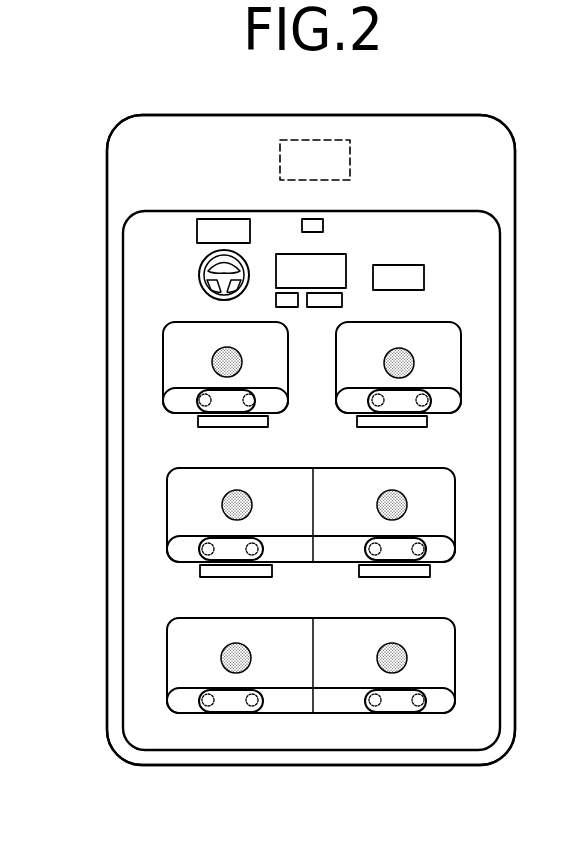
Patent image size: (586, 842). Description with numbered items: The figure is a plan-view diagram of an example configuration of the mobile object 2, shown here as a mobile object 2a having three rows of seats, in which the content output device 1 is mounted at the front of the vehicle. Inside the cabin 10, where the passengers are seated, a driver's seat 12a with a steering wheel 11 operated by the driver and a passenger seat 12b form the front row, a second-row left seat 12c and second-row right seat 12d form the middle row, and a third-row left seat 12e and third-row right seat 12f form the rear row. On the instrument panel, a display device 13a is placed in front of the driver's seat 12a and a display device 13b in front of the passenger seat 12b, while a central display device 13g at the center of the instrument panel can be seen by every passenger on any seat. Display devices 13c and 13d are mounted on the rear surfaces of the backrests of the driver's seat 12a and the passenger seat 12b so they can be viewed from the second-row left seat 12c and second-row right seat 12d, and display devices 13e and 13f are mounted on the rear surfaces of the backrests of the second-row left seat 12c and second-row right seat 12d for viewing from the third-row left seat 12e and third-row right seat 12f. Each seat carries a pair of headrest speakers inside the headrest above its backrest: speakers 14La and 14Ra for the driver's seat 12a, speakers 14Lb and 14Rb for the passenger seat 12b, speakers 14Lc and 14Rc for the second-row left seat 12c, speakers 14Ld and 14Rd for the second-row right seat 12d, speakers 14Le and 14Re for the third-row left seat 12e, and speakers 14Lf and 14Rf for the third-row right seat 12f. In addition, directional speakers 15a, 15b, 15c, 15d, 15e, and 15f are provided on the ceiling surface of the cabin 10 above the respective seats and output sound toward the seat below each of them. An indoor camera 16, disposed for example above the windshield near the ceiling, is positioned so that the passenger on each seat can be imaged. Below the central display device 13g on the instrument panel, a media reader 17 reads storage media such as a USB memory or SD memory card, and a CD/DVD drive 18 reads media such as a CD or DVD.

The content output device 1 is at (350, 152).
The mobile object 2 is at (390, 120).
The mobile object of three row seats 2a is at (311, 440).
The cabin 10 is at (137, 265).
The steering wheel 11 is at (199, 277).
The driver's seat 12a is at (204, 348).
The passenger seat 12b is at (447, 348).
The second-row left seat 12c is at (204, 493).
The second-row right seat 12d is at (442, 493).
The third-row left seat 12e is at (204, 645).
The third-row right seat 12f is at (441, 645).
The display device 13a is at (218, 222).
The display device 13b is at (405, 266).
The display device 13c is at (210, 423).
The display device 13d is at (408, 423).
The display device 13e is at (215, 578).
The display device 13f is at (415, 578).
The central display device 13g is at (343, 254).
The speaker 14La is at (200, 406).
The speaker 14Ra is at (248, 407).
The speaker 14Lb is at (378, 407).
The speaker 14Rb is at (428, 406).
The speaker 14Lc is at (204, 554).
The speaker 14Rc is at (252, 556).
The speaker 14Ld is at (375, 556).
The speaker 14Rd is at (422, 556).
The speaker 14Le is at (204, 707).
The speaker 14Re is at (251, 707).
The speaker 14Lf is at (372, 707).
The speaker 14Rf is at (417, 707).
The directional speaker 15a is at (234, 355).
The directional speaker 15b is at (388, 354).
The directional speaker 15c is at (243, 497).
The directional speaker 15d is at (382, 500).
The directional speaker 15e is at (243, 651).
The directional speaker 15f is at (382, 652).
The indoor camera 16 is at (316, 219).
The media reader 17 is at (292, 308).
The CD/DVD drive 18 is at (343, 300).